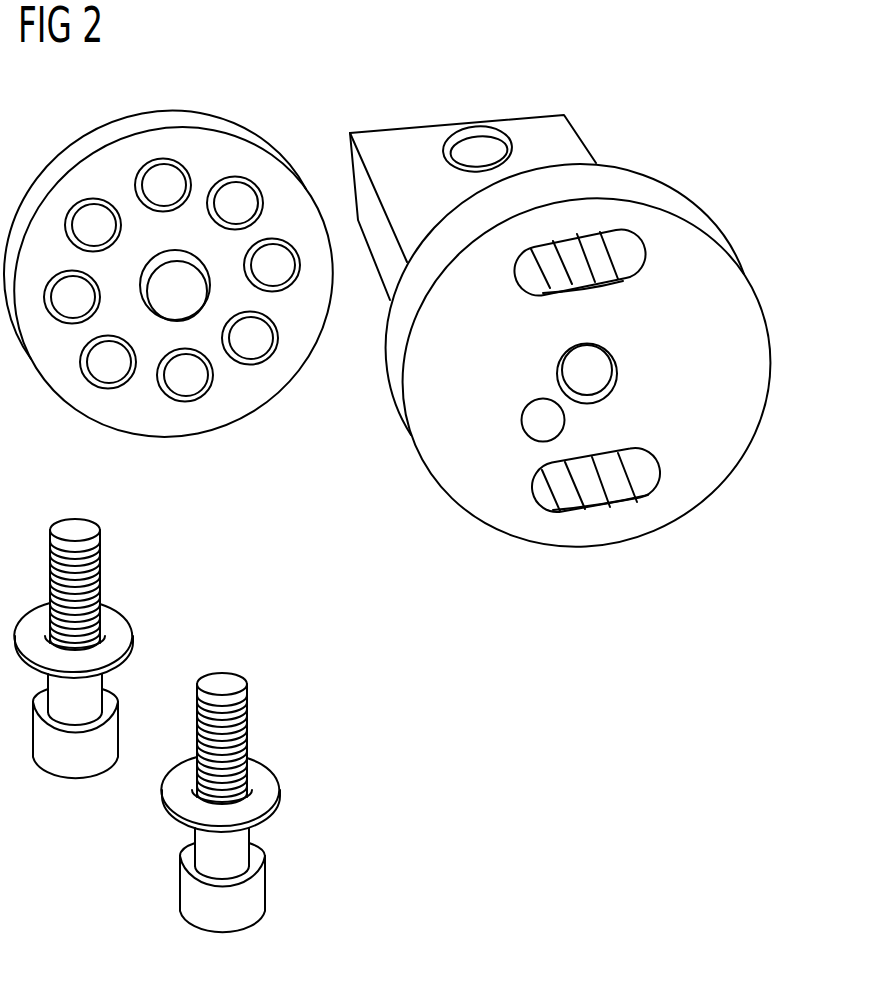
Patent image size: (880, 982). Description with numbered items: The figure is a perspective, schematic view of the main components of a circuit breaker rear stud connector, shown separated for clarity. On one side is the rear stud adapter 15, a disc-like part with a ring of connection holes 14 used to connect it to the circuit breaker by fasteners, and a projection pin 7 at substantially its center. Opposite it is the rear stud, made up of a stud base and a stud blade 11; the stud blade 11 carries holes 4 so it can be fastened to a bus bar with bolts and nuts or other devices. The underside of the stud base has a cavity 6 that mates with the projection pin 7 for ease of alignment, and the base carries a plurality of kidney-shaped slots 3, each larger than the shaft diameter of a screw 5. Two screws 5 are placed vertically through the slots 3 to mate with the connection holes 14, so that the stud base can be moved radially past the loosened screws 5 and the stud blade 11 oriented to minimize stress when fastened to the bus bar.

The slots 3 is at (630, 257).
The holes 4 is at (477, 148).
The screws 5 is at (73, 527).
The cavity 6 is at (596, 373).
The projection pin 7 is at (177, 298).
The stud blade 11 is at (393, 150).
The connection holes 14 is at (165, 181).
The rear stud adapter 15 is at (245, 395).